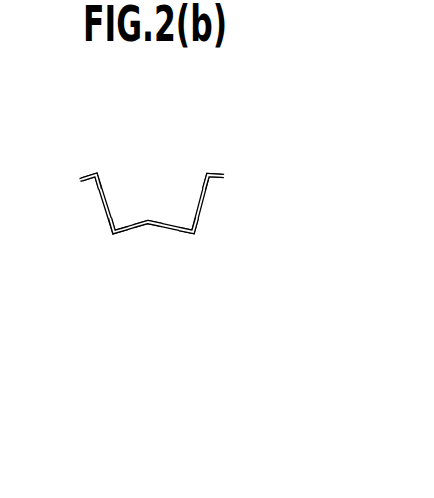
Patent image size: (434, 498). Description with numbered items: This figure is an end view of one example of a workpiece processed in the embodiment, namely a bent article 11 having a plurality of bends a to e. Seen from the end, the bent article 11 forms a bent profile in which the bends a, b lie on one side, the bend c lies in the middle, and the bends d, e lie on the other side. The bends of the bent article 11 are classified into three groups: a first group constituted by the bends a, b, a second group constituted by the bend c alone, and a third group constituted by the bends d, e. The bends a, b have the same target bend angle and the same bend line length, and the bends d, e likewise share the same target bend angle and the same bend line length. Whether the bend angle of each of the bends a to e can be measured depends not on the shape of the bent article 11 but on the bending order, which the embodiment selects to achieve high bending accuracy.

The bent article 11 is at (235, 152).
The bend a is at (98, 172).
The bend b is at (112, 237).
The bend c is at (148, 221).
The bend d is at (194, 236).
The bend e is at (207, 171).